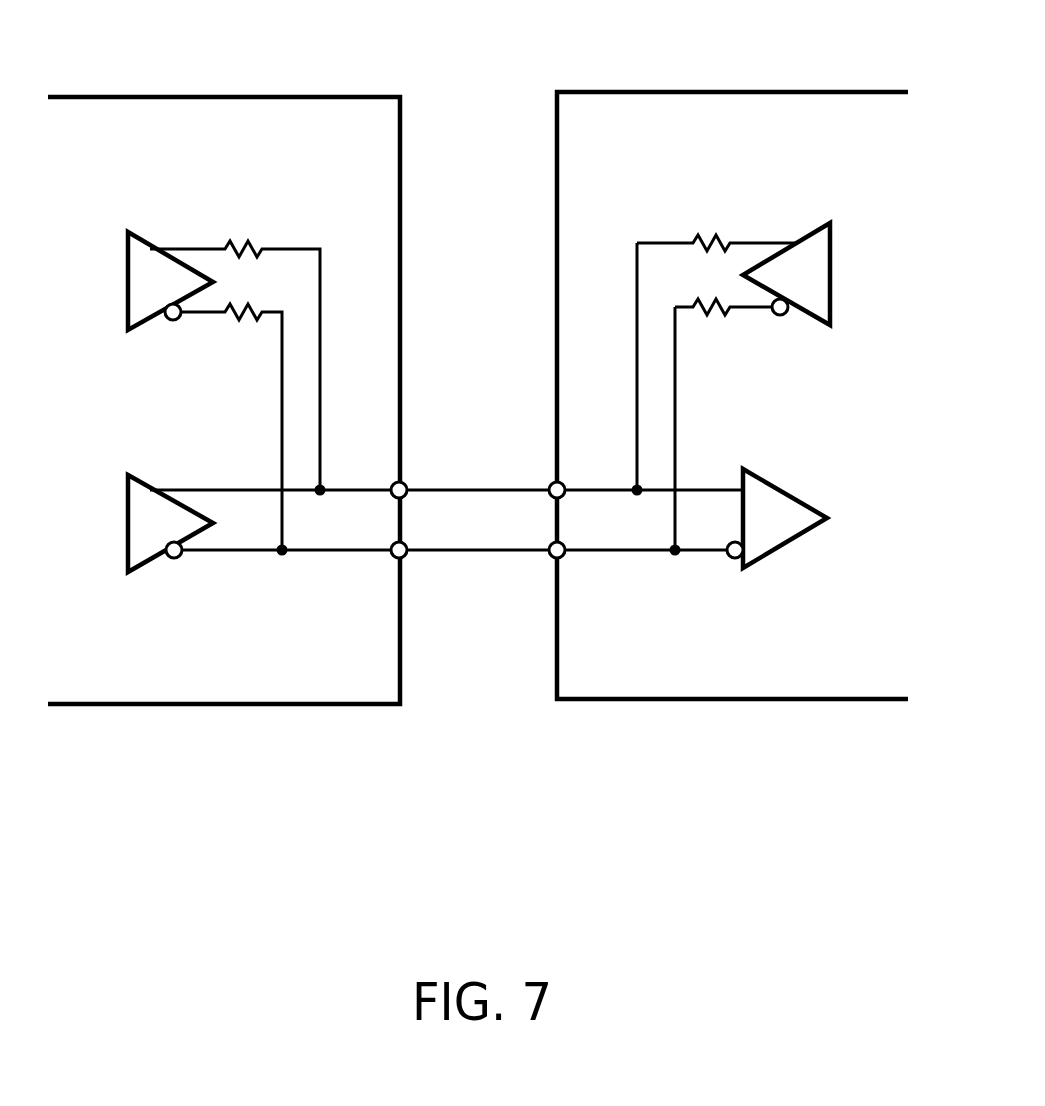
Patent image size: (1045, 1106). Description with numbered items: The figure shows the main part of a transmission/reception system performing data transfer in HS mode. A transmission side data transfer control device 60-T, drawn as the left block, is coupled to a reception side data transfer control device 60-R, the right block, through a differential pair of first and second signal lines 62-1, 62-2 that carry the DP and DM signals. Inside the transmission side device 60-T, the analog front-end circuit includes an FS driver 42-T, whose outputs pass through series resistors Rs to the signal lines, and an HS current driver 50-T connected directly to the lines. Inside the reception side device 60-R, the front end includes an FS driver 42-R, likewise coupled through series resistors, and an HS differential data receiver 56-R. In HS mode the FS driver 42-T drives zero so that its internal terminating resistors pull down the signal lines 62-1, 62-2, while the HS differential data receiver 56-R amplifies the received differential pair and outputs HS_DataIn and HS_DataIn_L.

The transmission side data transfer control device 60-T is at (184, 96).
The reception side data transfer control device 60-R is at (629, 91).
The FS driver 42-T is at (145, 236).
The FS driver 42-R is at (828, 224).
The HS current driver 50-T is at (150, 478).
The HS differential data receiver 56-R is at (782, 488).
The first signal line 62-1 is at (455, 553).
The second signal line 62-2 is at (463, 487).